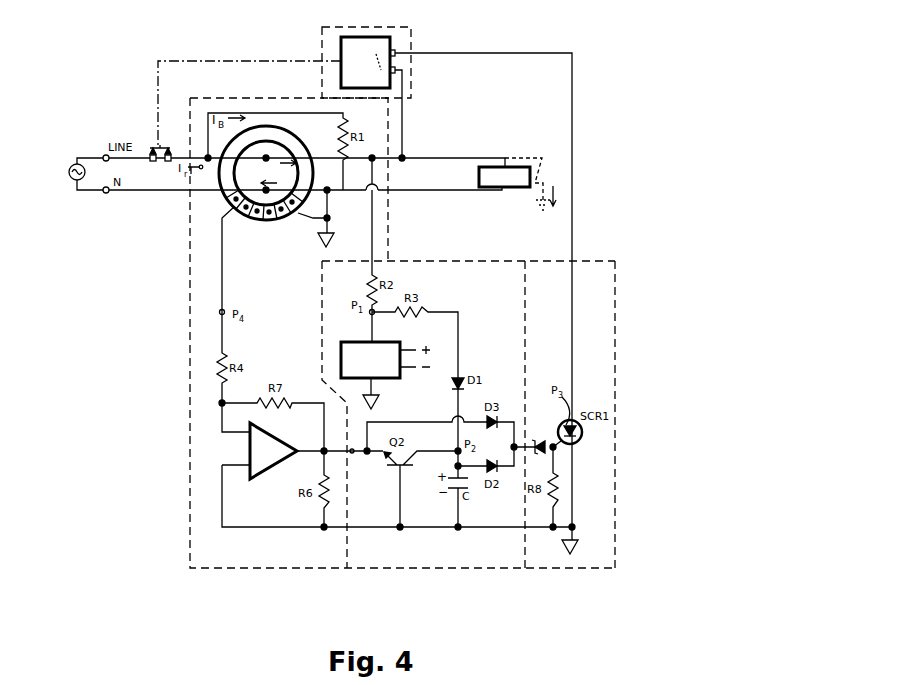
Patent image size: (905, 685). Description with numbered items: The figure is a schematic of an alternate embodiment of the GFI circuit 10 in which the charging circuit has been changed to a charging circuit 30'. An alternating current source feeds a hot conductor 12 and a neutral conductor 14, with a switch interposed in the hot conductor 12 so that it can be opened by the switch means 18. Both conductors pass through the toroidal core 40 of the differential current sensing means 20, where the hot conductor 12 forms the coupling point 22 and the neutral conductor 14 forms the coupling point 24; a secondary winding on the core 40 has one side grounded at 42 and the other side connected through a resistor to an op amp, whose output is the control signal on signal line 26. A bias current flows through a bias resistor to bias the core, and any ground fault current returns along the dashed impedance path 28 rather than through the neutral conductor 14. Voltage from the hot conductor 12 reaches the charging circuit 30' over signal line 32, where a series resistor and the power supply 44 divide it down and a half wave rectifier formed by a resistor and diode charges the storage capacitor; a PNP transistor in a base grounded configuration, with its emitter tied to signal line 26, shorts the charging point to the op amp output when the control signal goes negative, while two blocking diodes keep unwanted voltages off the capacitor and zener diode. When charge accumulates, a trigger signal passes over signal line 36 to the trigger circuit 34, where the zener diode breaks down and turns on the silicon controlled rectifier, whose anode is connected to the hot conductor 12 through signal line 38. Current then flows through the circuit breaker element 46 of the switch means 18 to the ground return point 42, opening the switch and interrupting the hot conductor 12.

The GFI circuit 10 is at (68, 166).
The hot conductor 12 is at (178, 153).
The neutral conductor 14 is at (127, 190).
The switch means 18 is at (411, 30).
The differential current sensing means 20 is at (189, 305).
The coupling point (primary winding) 22 is at (268, 158).
The coupling point (primary winding) 24 is at (268, 190).
The signal line 26 is at (352, 453).
The ground fault path 28 is at (540, 190).
The charging circuit 30' is at (468, 430).
The signal line 32 is at (371, 238).
The trigger circuit 34 is at (557, 568).
The signal line 36 is at (537, 440).
The signal line 38 is at (572, 225).
The toroidal core 40 is at (224, 204).
The ground return point 42 is at (331, 218).
The power supply 44 is at (352, 342).
The circuit breaker element 46 is at (365, 88).